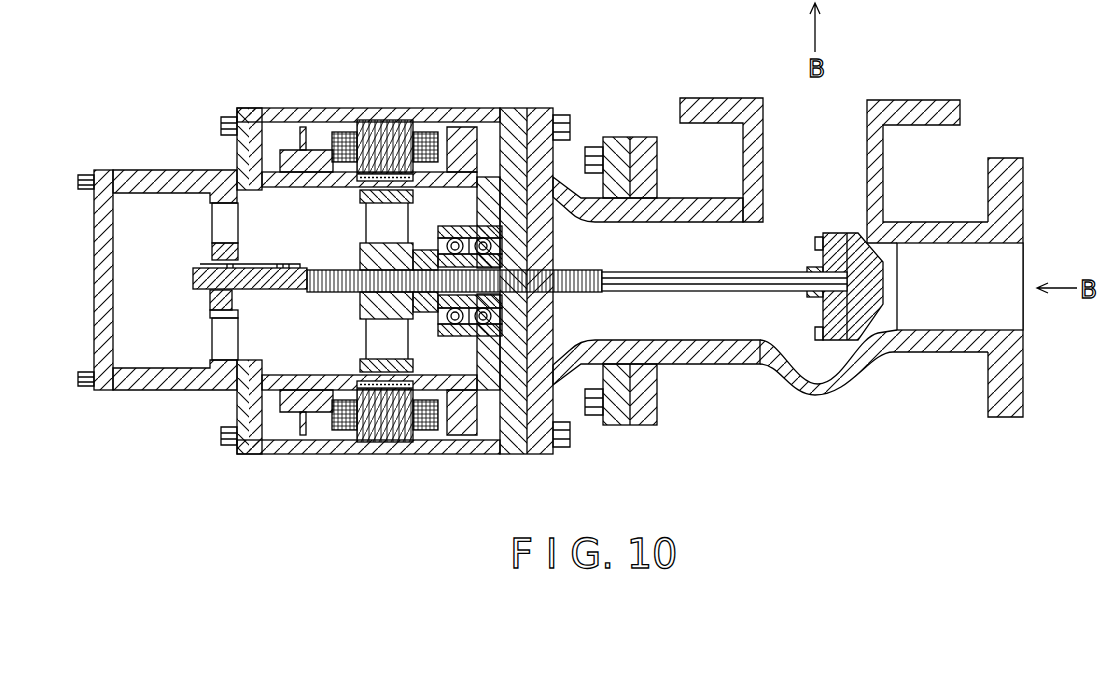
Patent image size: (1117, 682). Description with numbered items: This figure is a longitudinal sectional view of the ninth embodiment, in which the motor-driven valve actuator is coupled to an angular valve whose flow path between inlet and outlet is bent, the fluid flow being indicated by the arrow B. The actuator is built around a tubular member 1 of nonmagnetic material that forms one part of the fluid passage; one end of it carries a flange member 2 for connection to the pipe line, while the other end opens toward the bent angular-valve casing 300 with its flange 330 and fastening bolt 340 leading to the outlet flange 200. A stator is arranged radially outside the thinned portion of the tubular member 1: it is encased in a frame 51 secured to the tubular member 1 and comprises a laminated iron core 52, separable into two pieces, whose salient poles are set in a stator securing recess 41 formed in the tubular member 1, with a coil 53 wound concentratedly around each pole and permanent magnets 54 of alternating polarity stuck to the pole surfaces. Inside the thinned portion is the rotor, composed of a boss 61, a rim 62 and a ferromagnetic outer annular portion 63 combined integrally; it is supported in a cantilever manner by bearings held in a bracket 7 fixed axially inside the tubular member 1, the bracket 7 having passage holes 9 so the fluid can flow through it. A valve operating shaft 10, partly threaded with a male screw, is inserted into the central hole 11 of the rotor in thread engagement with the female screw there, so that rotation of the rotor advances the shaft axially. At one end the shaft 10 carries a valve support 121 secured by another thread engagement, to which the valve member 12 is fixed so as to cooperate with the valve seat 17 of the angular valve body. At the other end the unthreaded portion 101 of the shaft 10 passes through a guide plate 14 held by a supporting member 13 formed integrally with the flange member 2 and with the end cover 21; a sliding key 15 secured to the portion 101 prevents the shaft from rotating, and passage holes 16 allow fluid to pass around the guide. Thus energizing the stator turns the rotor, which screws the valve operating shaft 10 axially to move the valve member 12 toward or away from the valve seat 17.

The tubular member 1 is at (311, 170).
The flange member 2 is at (166, 170).
The bracket 7 is at (500, 147).
The passage holes 9 is at (500, 205).
The valve operating shaft 10 is at (318, 268).
The central hole 11 is at (507, 267).
The valve member 12 is at (877, 273).
The supporting member 13 is at (212, 318).
The guide plate 14 is at (212, 302).
The sliding key 15 is at (212, 256).
The passage holes 16 is at (214, 226).
The valve seat 17 is at (873, 337).
The end cover 21 is at (106, 170).
The stator securing recess 41 is at (447, 167).
The frame 51 is at (483, 108).
The laminated iron core 52 is at (382, 120).
The coil 53 is at (338, 131).
The permanent magnets 54 is at (412, 186).
The boss 61 is at (360, 303).
The rim 62 is at (405, 338).
The outer annular portion 63 is at (358, 363).
The not threaded portion 101 is at (290, 290).
The valve support 121 is at (823, 313).
The discharge flange 200 is at (1020, 387).
The pump casing 300 is at (917, 102).
The casing flange 330 is at (657, 402).
The bolt 340 is at (620, 417).